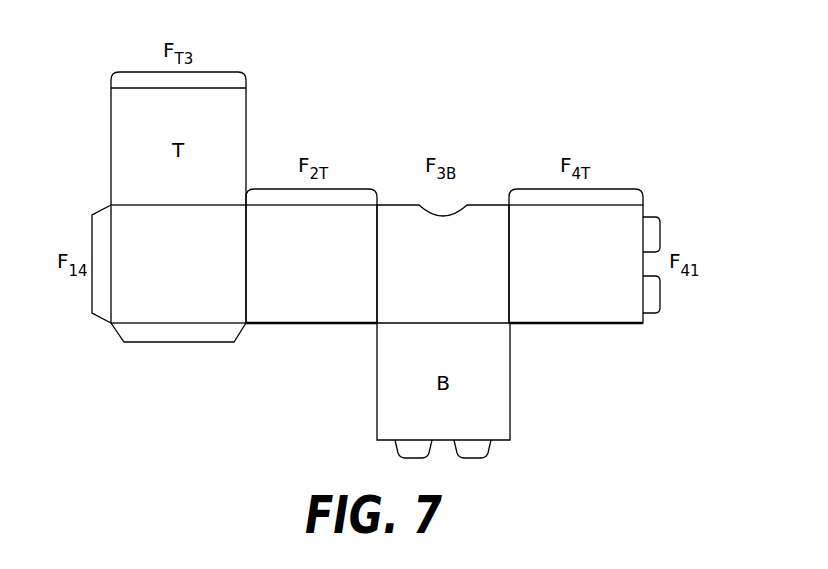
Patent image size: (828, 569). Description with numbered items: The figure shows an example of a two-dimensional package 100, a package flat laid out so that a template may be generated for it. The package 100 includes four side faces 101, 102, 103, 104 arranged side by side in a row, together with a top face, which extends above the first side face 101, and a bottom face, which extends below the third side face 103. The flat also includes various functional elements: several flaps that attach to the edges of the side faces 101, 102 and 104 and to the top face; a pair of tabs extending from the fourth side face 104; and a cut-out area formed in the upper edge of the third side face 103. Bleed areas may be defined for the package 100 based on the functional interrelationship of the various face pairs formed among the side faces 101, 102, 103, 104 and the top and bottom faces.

The package 100 is at (548, 125).
The side face 101 is at (169, 273).
The side face 102 is at (311, 256).
The side face 103 is at (443, 264).
The side face 104 is at (584, 256).